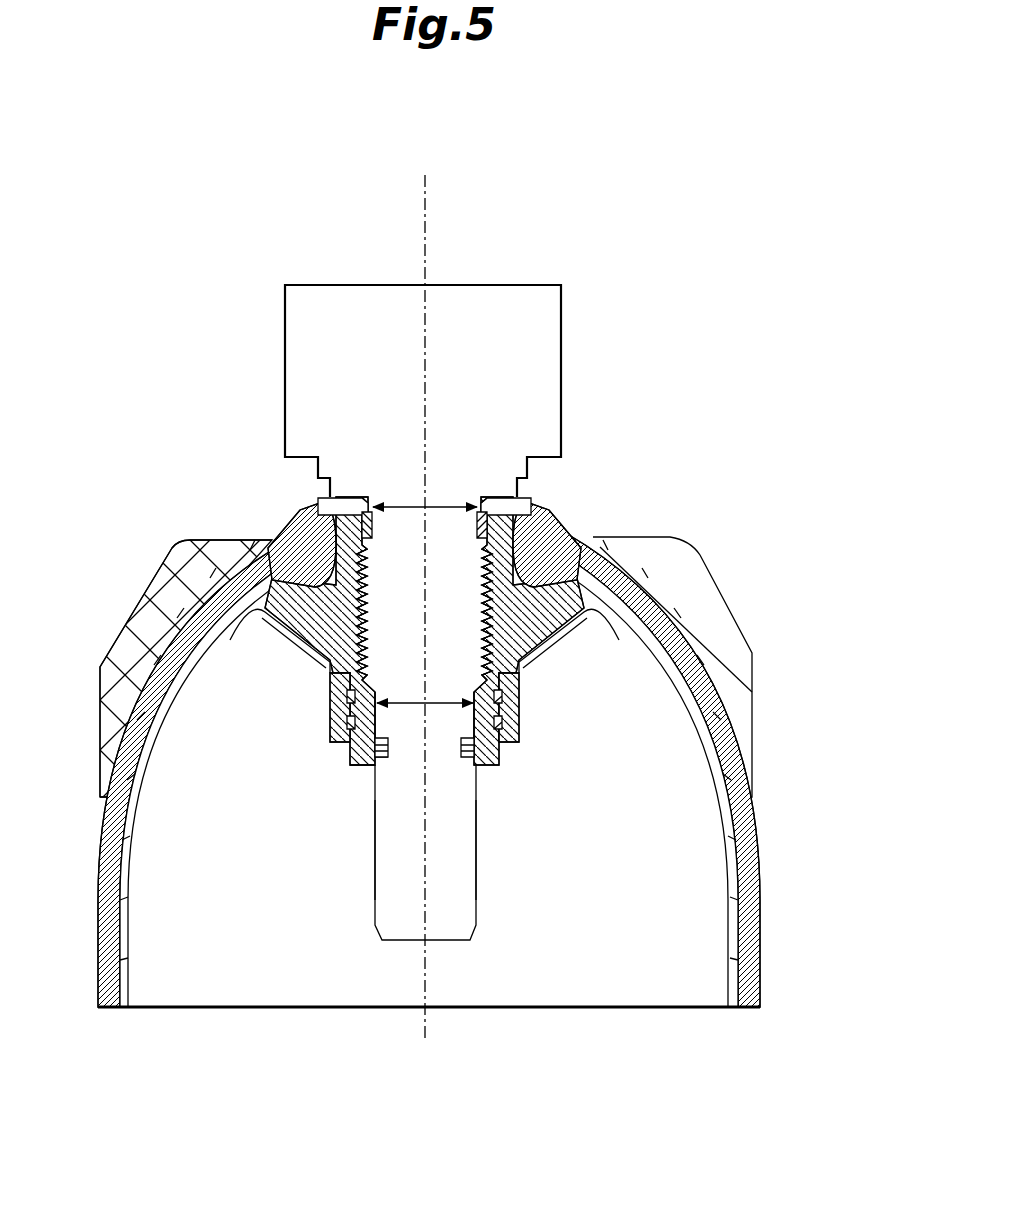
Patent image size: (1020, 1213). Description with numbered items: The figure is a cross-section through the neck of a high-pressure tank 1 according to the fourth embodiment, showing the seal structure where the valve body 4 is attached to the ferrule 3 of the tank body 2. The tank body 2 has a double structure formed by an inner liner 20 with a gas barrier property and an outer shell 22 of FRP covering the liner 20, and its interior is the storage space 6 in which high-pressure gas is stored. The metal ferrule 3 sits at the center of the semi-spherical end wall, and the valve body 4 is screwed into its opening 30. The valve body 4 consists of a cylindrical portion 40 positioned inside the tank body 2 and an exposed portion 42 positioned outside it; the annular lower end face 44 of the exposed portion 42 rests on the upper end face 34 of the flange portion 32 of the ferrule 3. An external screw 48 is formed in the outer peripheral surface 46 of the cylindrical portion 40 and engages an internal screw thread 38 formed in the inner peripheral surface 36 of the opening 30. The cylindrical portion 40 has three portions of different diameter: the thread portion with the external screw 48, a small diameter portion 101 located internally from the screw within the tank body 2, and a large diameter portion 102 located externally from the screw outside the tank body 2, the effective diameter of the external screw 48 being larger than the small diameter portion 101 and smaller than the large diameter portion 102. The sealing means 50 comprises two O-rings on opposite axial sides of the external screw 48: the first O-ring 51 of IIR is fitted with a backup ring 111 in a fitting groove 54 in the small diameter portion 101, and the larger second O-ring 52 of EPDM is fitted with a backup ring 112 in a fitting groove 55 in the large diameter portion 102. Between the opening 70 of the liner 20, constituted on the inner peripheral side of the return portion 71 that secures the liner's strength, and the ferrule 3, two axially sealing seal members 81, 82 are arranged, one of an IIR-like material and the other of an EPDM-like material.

The high-pressure tank 1 is at (636, 416).
The tank body 2 is at (838, 843).
The ferrule 3 is at (573, 620).
The valve body 4 is at (529, 266).
The storage space 6 is at (611, 993).
The liner 20 is at (733, 893).
The shell 22 is at (757, 850).
The opening 30 is at (367, 770).
The flange portion 32 is at (532, 500).
The upper end face 34 is at (528, 480).
The inner peripheral surface 36 is at (480, 765).
The internal screw thread 38 is at (323, 663).
The cylindrical portion 40 is at (382, 878).
The exposed portion 42 is at (287, 379).
The lower end face 44 is at (322, 510).
The outer peripheral surface 46 is at (476, 899).
The external screw 48 is at (518, 688).
The sealing means 50 is at (390, 765).
The first O-ring 51 is at (375, 762).
The second O-ring 52 is at (487, 668).
The fitting groove 54 is at (396, 767).
The fitting groove 55 is at (482, 538).
The opening 70 is at (503, 745).
The return portion 71 is at (505, 718).
The seal member 81 is at (349, 718).
The seal member 82 is at (349, 698).
The small diameter portion 101 is at (376, 847).
The large diameter portion 102 is at (600, 555).
The backup ring 111 is at (372, 754).
The backup ring 112 is at (365, 518).